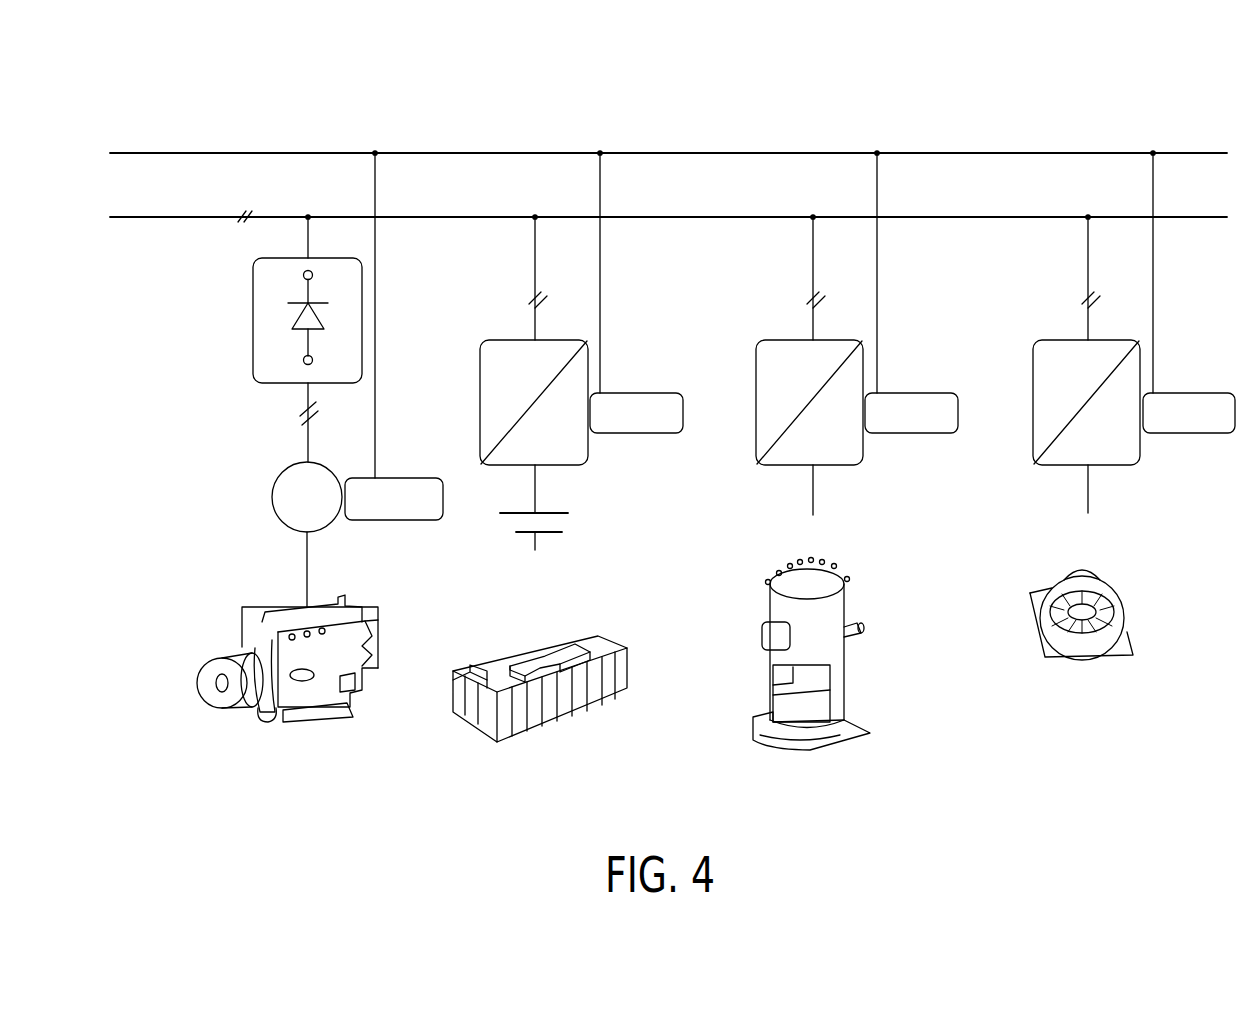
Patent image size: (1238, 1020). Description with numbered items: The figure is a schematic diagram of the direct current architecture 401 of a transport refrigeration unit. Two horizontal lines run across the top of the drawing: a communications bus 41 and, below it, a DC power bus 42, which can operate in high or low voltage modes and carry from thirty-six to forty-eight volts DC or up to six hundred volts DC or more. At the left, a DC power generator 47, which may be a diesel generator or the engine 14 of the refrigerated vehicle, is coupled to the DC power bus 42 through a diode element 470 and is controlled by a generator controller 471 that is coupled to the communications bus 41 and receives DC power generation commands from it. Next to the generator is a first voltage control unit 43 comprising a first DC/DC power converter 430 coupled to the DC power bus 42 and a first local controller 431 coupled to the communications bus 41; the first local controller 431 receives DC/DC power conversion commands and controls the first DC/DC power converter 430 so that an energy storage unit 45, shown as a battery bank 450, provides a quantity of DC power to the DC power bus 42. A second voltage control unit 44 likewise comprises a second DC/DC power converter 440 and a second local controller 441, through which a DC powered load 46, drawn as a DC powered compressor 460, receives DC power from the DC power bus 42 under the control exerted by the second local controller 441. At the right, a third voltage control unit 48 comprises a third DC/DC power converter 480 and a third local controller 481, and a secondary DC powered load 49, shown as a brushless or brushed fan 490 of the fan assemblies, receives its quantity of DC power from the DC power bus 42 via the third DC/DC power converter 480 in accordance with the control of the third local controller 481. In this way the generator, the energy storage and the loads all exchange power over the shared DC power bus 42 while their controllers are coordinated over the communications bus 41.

The direct current (DC) architecture 401 is at (1152, 132).
The communications bus 41 is at (115, 153).
The DC power bus 42 is at (115, 217).
The diode element 470 is at (263, 305).
The generator controller 471 is at (417, 478).
The engine 14 is at (236, 622).
The DC power generator 47 is at (253, 707).
The first DC/DC power converter 430 is at (488, 365).
The first local controller 431 is at (648, 392).
The first voltage control unit (VCU) 43 is at (596, 441).
The energy storage unit 45 is at (568, 703).
The battery bank 450 is at (466, 713).
The second DC/DC power converter 440 is at (765, 365).
The second local controller 441 is at (925, 392).
The second voltage control unit (VCU) 44 is at (876, 443).
The DC powered load 46 is at (833, 732).
The DC powered compressor 460 is at (768, 717).
The third DC/DC power converter 480 is at (1038, 365).
The third local controller 481 is at (1202, 393).
The third voltage control unit (VCU) 48 is at (1149, 443).
The secondary DC powered load 49 is at (1122, 650).
The fan 490 is at (1087, 659).